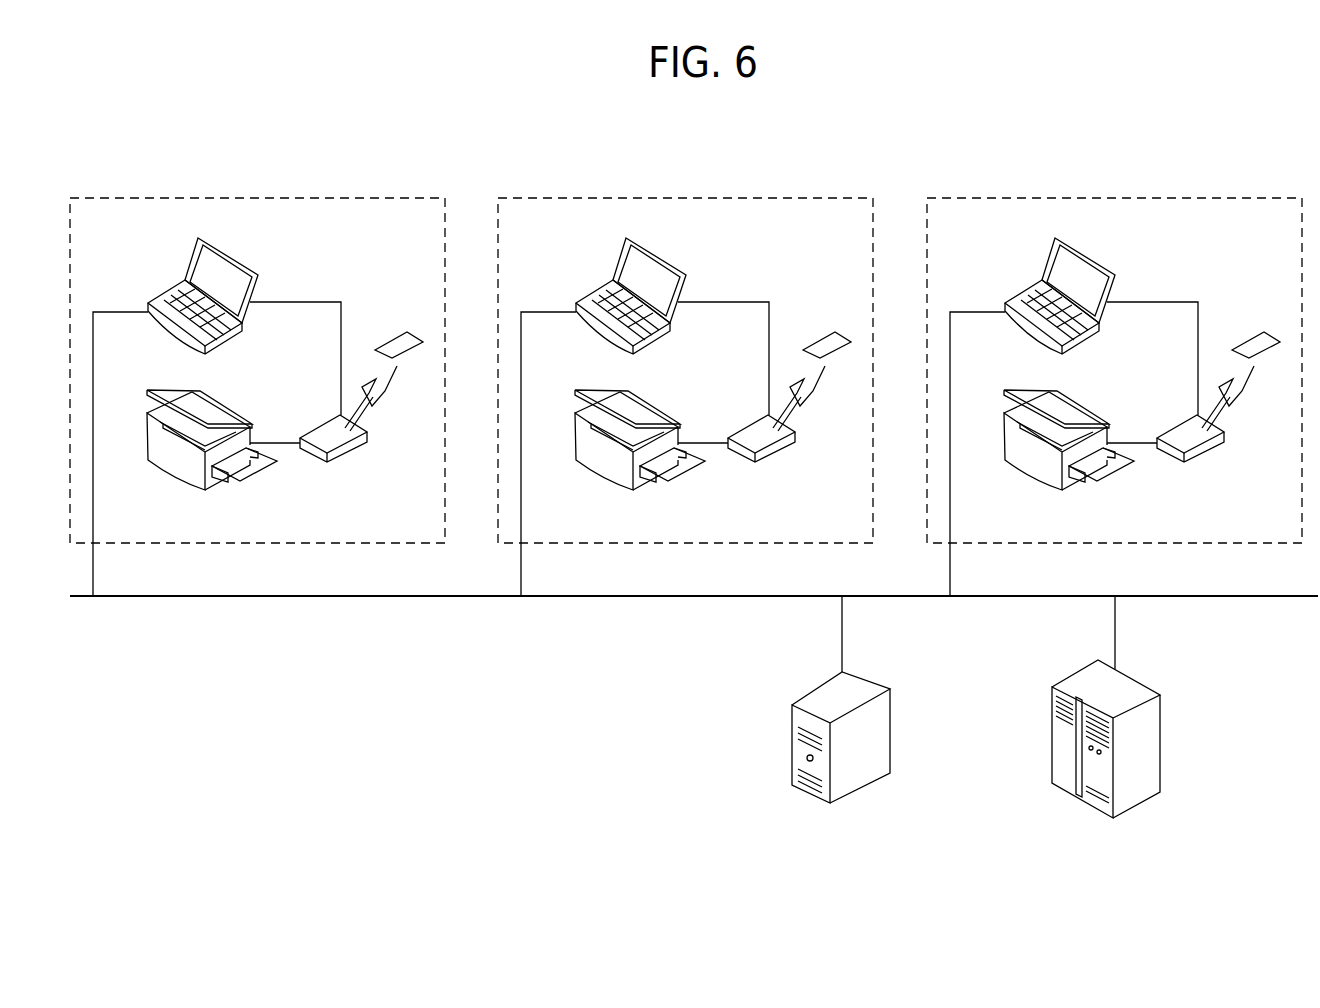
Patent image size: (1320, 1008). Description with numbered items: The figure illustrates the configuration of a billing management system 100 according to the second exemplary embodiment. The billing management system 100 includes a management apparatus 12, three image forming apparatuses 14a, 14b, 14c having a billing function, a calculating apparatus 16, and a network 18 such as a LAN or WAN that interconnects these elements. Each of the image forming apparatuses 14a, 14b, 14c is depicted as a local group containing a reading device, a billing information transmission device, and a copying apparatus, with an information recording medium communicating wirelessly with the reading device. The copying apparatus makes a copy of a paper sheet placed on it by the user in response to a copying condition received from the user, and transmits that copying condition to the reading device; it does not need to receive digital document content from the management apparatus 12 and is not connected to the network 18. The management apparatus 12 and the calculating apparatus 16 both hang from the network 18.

The management apparatus 12 is at (802, 797).
The image forming apparatus having billing function 14a is at (397, 198).
The image forming apparatus having billing function 14b is at (685, 347).
The image forming apparatus having billing function 14c is at (1114, 347).
The calculating apparatus 16 is at (1088, 805).
The network 18 is at (1290, 597).
The billing management system 100 is at (582, 827).